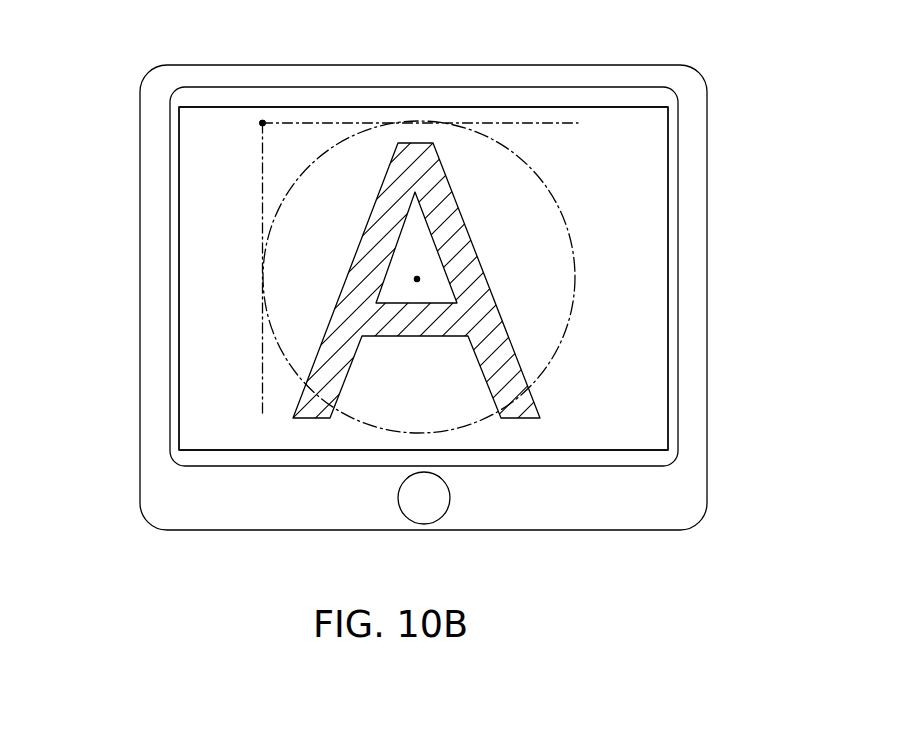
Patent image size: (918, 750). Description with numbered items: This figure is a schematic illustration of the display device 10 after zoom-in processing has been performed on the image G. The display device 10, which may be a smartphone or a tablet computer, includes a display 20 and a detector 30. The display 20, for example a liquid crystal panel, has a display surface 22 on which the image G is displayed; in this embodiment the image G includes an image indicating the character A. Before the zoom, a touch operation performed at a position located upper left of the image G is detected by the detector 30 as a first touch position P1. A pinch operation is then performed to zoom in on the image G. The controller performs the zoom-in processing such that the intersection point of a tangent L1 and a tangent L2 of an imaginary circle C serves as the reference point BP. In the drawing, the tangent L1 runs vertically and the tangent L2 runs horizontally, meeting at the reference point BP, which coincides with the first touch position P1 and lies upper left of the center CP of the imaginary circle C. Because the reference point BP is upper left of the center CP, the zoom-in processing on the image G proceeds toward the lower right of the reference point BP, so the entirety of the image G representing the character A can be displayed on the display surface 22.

The display device 10 is at (723, 68).
The display 20 is at (638, 160).
The display surface 22 is at (638, 200).
The detector 30 is at (638, 242).
The image G is at (178, 357).
The imaginary circle C is at (563, 336).
The center CP is at (417, 283).
The tangent L1 is at (262, 197).
The tangent L2 is at (328, 122).
The first touch position P1 is at (262, 123).
The reference point BP is at (262, 122).